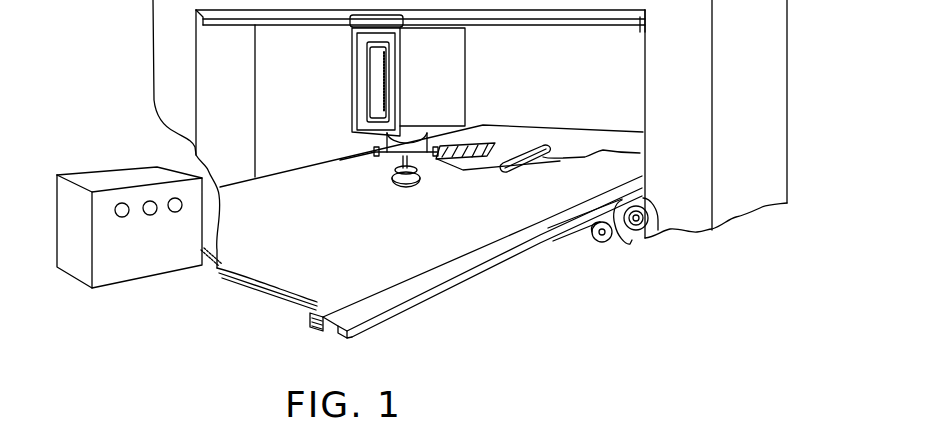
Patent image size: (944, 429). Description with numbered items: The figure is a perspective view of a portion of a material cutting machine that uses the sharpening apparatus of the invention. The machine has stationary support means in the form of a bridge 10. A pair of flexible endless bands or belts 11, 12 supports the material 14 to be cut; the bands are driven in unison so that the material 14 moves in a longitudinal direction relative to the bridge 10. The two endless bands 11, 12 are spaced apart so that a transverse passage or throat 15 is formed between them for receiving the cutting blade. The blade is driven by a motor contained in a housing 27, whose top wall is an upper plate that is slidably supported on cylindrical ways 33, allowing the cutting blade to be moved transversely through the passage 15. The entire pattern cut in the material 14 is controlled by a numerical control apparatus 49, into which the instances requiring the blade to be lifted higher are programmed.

The bridge 10 is at (788, 130).
The endless band 11 is at (450, 290).
The endless band 12 is at (662, 232).
The material 14 is at (341, 260).
The transverse passage 15 is at (618, 244).
The housing 27 is at (466, 99).
The cylindrical ways 33 is at (307, 26).
The numerical control apparatus 49 is at (158, 260).